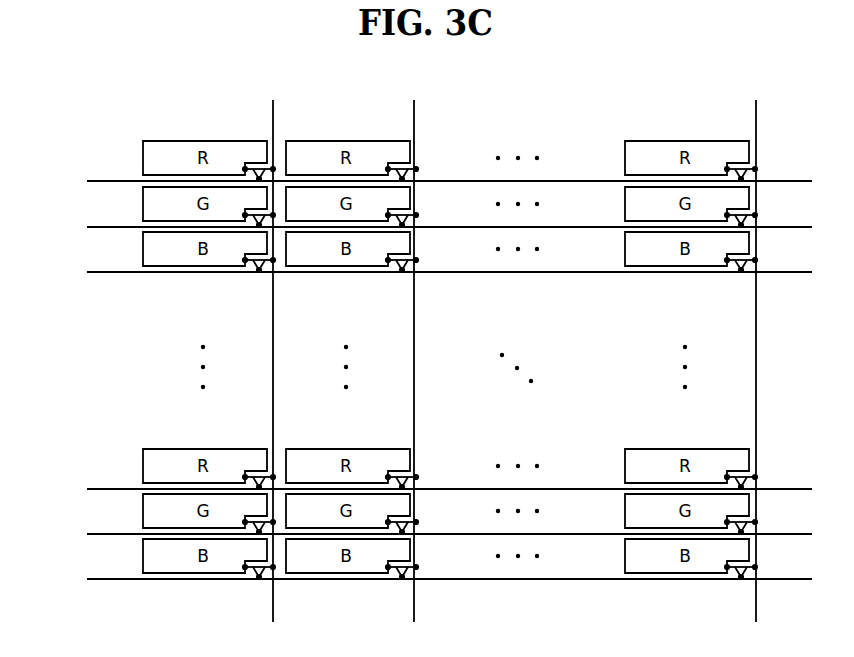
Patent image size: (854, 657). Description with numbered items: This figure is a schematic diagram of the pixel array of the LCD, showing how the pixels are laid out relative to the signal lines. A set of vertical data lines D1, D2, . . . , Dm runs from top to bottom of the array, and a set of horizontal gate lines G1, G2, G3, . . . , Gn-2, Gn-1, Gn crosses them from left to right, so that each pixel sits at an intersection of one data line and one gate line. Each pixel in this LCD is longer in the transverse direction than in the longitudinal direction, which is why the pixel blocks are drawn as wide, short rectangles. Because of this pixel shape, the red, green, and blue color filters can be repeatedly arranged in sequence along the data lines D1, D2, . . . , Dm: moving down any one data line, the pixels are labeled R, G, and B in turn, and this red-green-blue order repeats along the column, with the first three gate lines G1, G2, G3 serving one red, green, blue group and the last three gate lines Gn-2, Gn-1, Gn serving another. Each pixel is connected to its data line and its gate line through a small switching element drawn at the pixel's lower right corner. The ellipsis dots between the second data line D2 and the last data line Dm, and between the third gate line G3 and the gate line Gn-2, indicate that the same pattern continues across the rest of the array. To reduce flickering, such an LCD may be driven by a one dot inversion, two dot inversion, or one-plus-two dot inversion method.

The data line D1 is at (271, 351).
The data line D2 is at (414, 351).
The data line Dm is at (755, 351).
The first gate line G1 is at (426, 185).
The second gate line G2 is at (426, 230).
The third gate line G3 is at (426, 276).
The (n-2)th gate line Gn-2 is at (426, 492).
The (n-1)th gate line Gn-1 is at (426, 537).
The n-th gate line Gn is at (426, 582).